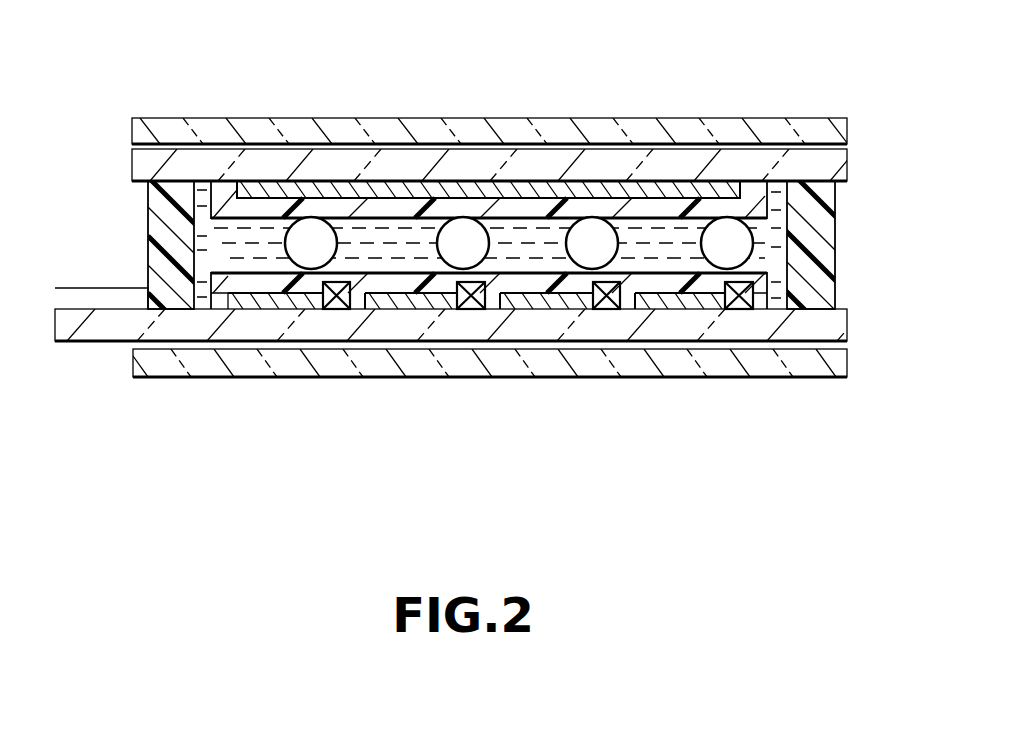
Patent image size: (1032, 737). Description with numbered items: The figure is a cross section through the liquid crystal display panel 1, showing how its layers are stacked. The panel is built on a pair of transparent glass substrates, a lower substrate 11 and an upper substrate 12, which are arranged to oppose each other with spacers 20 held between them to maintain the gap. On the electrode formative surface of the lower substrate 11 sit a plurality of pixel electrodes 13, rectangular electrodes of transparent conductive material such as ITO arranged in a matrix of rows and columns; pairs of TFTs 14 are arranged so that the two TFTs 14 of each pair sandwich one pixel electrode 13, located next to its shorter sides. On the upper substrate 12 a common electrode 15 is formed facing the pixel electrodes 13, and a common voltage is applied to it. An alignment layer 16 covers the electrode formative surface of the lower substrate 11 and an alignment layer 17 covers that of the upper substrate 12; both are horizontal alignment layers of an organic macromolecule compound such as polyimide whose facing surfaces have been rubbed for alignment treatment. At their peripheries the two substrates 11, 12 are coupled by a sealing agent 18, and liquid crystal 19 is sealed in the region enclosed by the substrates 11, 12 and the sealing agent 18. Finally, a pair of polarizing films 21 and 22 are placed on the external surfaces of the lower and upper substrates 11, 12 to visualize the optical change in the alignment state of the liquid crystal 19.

The liquid crystal display panel 1 is at (835, 100).
The lower substrate 11 is at (777, 322).
The upper substrate 12 is at (673, 163).
The pixel electrodes 13 is at (437, 298).
The TFTs 14 is at (341, 300).
The common electrode 15 is at (527, 188).
The alignment layer 16 is at (575, 280).
The alignment layer 17 is at (400, 208).
The sealing agent 18 is at (822, 221).
The liquid crystal 19 is at (654, 252).
The spacers 20 is at (312, 240).
The polarizing film 21 is at (227, 362).
The polarizing film 22 is at (192, 130).